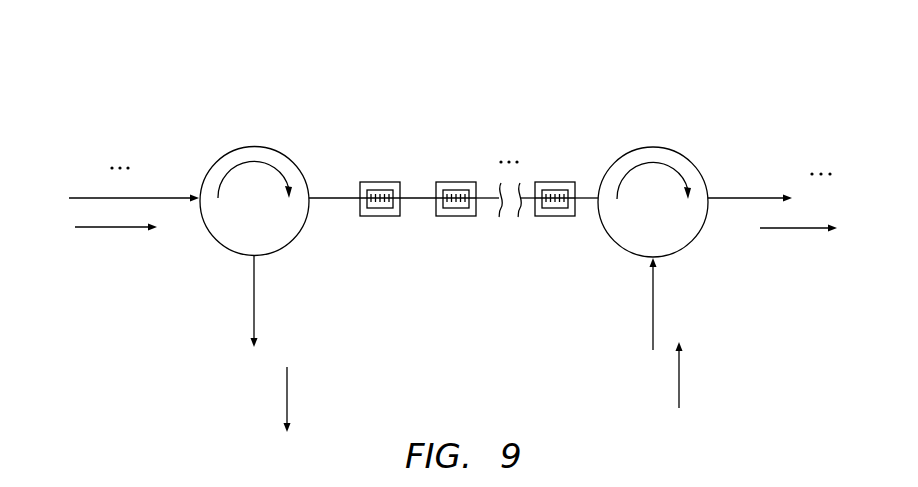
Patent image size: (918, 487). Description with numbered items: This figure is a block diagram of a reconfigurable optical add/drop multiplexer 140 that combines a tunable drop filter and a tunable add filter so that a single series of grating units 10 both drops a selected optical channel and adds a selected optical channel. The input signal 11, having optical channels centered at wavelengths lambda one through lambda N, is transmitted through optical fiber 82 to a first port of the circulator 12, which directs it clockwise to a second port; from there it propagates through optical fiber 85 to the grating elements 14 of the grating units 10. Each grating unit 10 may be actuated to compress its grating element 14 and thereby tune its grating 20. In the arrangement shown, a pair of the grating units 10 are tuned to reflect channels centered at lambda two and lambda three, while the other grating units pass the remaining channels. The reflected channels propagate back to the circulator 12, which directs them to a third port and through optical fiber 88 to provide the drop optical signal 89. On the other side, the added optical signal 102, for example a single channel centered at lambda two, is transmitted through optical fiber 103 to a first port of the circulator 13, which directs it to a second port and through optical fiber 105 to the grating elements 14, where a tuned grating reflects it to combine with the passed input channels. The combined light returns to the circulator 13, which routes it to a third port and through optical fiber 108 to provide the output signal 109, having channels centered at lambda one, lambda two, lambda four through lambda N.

The reconfigurable optical add/drop multiplexer 140 is at (534, 84).
The circulator 12 is at (253, 147).
The circulator 13 is at (654, 147).
The optical fiber 82 is at (173, 197).
The input signal 11 is at (113, 228).
The optical fiber 85 is at (340, 198).
The grating unit 10 is at (477, 203).
The grating element 14 is at (463, 191).
The grating 20 is at (452, 206).
The optical fiber 105 is at (587, 192).
The optical fiber 108 is at (727, 203).
The output signal 109 is at (797, 230).
The optical fiber 88 is at (255, 305).
The drop optical signal 89 is at (287, 393).
The optical fiber 103 is at (653, 306).
The added optical signal 102 is at (679, 378).